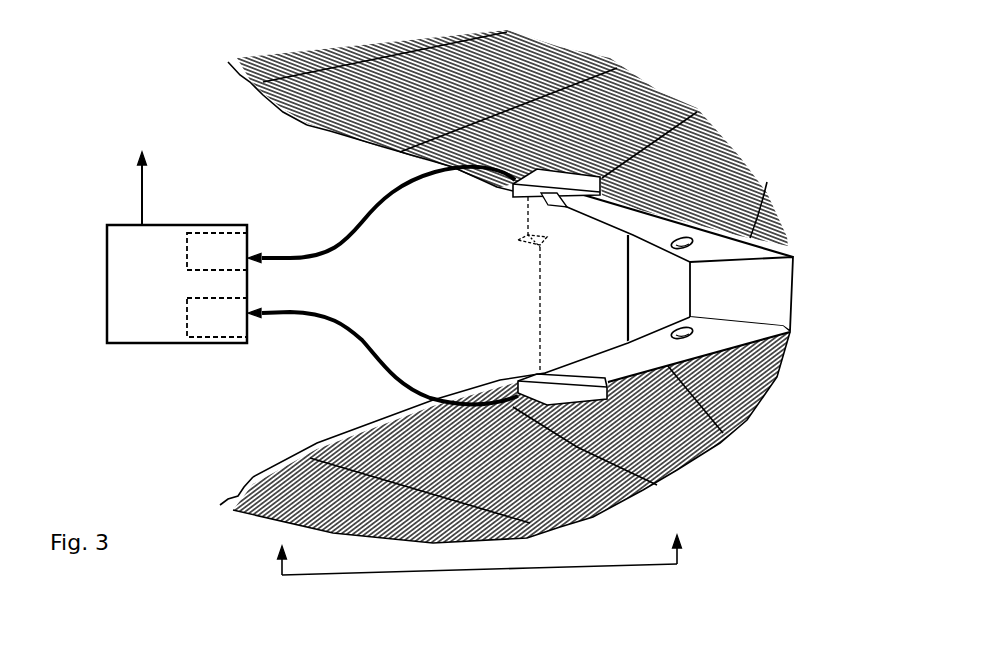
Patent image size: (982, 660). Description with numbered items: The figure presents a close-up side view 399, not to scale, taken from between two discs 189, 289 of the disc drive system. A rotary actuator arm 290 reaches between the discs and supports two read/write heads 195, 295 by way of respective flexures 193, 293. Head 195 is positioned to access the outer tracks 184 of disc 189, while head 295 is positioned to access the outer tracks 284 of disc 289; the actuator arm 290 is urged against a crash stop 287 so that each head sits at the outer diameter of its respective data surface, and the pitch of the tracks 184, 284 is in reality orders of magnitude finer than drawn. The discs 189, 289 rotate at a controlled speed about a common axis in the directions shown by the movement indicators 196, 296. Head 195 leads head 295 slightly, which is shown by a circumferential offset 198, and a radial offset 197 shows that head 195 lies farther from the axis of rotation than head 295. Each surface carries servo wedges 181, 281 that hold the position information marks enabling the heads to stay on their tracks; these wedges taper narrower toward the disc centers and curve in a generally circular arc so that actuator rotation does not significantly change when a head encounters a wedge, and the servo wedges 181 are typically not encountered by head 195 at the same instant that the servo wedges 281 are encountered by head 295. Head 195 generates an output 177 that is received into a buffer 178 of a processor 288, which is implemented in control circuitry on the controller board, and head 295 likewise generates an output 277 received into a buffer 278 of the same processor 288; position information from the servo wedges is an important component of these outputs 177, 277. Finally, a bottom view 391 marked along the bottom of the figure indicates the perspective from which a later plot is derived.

The side view 399 is at (812, 58).
The servo wedges 281 is at (522, 30).
The outer tracks 284 is at (772, 183).
The disc 289 is at (330, 128).
The movement indicator 296 is at (280, 125).
The read/write head 295 is at (510, 192).
The flexure 293 is at (622, 222).
The crash stop 287 is at (676, 311).
The rotary actuator arm 290 is at (761, 300).
The circumferential offset 198 is at (575, 248).
The radial offset 197 is at (524, 254).
The flexure 193 is at (627, 355).
The read/write head 195 is at (522, 382).
The servo wedges 181 is at (574, 528).
The outer tracks 184 is at (780, 382).
The disc 189 is at (328, 440).
The movement indicator 196 is at (278, 445).
The output 277 is at (381, 215).
The output 177 is at (383, 357).
The processor 288 is at (154, 298).
The buffer 278 is at (238, 265).
The buffer 178 is at (238, 326).
The bottom view 391 is at (481, 561).